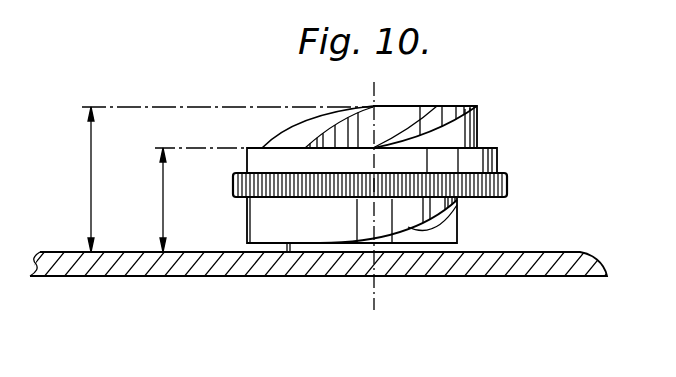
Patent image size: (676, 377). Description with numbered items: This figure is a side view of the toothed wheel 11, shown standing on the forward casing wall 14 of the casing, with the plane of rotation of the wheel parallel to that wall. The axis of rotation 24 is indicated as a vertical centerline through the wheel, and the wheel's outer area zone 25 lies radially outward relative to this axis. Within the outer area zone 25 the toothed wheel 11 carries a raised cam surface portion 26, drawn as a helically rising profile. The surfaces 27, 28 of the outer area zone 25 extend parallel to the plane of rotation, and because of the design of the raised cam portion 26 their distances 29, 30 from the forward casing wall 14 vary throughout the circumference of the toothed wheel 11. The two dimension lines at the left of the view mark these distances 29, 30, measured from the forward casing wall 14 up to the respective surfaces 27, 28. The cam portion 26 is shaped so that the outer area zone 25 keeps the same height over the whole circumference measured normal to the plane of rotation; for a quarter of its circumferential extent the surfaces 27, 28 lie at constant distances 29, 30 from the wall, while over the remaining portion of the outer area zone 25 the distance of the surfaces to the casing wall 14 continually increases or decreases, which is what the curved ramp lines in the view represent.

The toothed wheel 11 is at (480, 130).
The forward wall of casing 14 is at (157, 268).
The axis of rotation 24 is at (375, 294).
The outer area zone 25 is at (272, 227).
The raised cam surface portion 26 is at (415, 230).
The surface of outer area zone 27 is at (289, 147).
The surface of outer area zone 28 is at (456, 112).
The distance 29 is at (201, 200).
The distance 30 is at (227, 179).